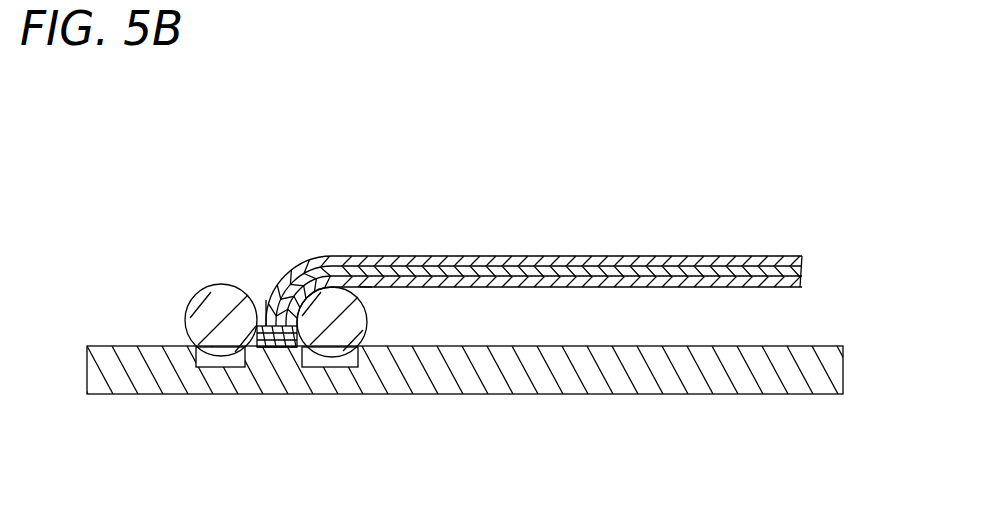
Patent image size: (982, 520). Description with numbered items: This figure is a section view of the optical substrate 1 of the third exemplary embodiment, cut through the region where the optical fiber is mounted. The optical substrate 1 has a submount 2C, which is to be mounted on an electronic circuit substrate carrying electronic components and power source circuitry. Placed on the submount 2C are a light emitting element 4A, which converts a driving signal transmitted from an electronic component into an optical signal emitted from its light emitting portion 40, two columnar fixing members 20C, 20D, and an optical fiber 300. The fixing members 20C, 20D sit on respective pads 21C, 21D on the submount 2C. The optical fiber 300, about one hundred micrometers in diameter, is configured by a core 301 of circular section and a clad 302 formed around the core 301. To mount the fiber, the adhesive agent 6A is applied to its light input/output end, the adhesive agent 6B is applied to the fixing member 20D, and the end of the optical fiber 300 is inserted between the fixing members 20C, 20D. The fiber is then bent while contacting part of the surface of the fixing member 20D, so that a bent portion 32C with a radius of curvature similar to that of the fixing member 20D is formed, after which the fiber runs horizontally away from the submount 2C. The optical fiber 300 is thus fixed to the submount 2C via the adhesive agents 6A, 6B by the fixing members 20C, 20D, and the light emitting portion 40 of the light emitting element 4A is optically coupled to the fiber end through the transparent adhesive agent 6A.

The optical substrate 1 is at (790, 155).
The submount 2C is at (692, 382).
The light emitting element 4A is at (251, 347).
The adhesive agent 6A is at (262, 305).
The adhesive agent 6B is at (370, 302).
The fixing member 20C is at (212, 305).
The fixing member 20D is at (369, 338).
The terminal pad 21C is at (201, 362).
The terminal pad 21D is at (356, 364).
The bent portion 32C is at (265, 214).
The light emitting portion 40 is at (284, 347).
The optical fiber 300 is at (527, 230).
The core 301 is at (752, 273).
The clad 302 is at (628, 257).